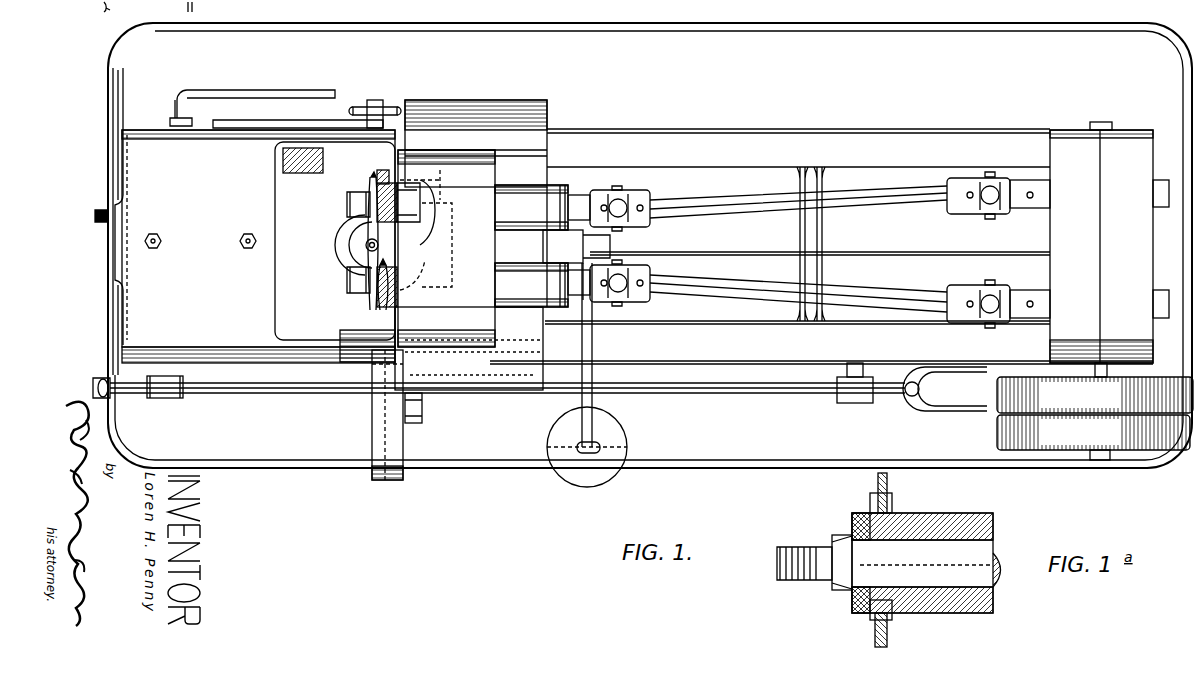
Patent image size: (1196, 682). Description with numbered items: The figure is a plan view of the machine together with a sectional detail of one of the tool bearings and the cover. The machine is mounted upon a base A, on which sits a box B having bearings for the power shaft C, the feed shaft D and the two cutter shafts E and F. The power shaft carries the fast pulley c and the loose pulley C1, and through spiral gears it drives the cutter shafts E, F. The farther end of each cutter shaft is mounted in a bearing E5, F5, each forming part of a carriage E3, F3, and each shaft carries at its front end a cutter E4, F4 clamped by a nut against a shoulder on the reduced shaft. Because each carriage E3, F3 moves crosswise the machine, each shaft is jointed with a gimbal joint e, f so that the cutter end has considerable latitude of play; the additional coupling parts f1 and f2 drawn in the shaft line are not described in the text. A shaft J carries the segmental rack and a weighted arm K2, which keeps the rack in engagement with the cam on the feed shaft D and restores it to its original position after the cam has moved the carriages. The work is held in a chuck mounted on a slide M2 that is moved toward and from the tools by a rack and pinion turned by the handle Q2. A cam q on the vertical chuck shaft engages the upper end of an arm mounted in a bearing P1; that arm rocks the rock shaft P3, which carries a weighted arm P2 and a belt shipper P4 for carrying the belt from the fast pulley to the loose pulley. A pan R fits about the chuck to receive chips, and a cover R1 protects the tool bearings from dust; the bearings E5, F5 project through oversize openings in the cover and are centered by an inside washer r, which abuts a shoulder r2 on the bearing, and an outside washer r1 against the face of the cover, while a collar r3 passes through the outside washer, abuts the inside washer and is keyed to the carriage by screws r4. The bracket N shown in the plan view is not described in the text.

In FIG. 1, the base A is at (643, 245).
In FIG. 1, the box B is at (1101, 242).
In FIG. 1, the power shaft C is at (1095, 395).
In FIG. 1, the loose pulley C1 is at (1093, 411).
In FIG. 1, the feed shaft D is at (910, 245).
In FIG. 1, the cutter shaft E is at (1162, 184).
In FIG. 1, the cutter shaft F is at (1161, 293).
In FIG. 1, the carriage E3 is at (471, 268).
In FIG. 1, the cutter E4 is at (372, 194).
In FIG. 1, the bearing E5 is at (531, 207).
In FIG. 1A, the bearing E5 is at (945, 513).
In FIG. 1, the carriage F3 is at (572, 355).
In FIG. 1, the cutter F4 is at (350, 260).
In FIG. 1, the bearing F5 is at (531, 285).
In FIG. 1, the shaft J is at (615, 240).
In FIG. 1, the weighted arm K2 is at (616, 414).
In FIG. 1, the slide M2 is at (258, 241).
In FIG. 1, the bracket N is at (377, 98).
In FIG. 1, the bearing P1 is at (367, 370).
In FIG. 1, the weighted arm P2 is at (408, 442).
In FIG. 1, the rock shaft P3 is at (499, 390).
In FIG. 1, the belt shipper P4 is at (948, 422).
In FIG. 1, the handle Q2 is at (260, 96).
In FIG. 1, the pan R is at (275, 302).
In FIG. 1, the cover R1 is at (516, 145).
In FIG. 1A, the cover R1 is at (894, 560).
In FIG. 1, the fast pulley c is at (1015, 175).
In FIG. 1, the gimbal joint e is at (644, 202).
In FIG. 1, the gimbal joint f is at (580, 267).
In FIG. 1, the coupling f1 is at (576, 246).
In FIG. 1, the lower joint f2 is at (651, 300).
In FIG. 1, the cam q is at (340, 246).
In FIG. 1A, the inside washer r is at (915, 615).
In FIG. 1A, the outside washer r1 is at (855, 613).
In FIG. 1, the shoulder r2 is at (406, 190).
In FIG. 1A, the shoulder r2 is at (900, 513).
In FIG. 1, the collar r3 is at (377, 169).
In FIG. 1A, the collar r3 is at (858, 517).
In FIG. 1A, the screws r4 is at (848, 596).